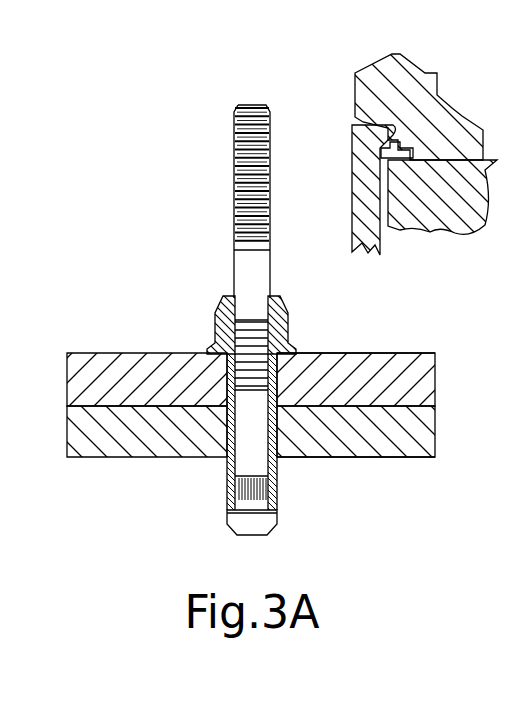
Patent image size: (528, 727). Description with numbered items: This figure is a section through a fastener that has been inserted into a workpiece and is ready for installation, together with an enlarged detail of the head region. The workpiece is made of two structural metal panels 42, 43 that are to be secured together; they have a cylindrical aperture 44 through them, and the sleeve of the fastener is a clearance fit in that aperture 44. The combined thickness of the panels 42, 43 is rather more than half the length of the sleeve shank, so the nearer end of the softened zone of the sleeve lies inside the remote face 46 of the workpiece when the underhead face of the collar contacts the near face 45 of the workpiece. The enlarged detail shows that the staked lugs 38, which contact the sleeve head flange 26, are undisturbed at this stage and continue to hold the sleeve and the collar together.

The sleeve head flange 26 is at (393, 128).
The staked lugs 38 is at (402, 147).
The structural metal panel 42 is at (143, 365).
The structural metal panel 43 is at (145, 442).
The cylindrical aperture 44 is at (278, 432).
The near face of the workpiece 45 is at (342, 355).
The remote face of the workpiece 46 is at (368, 456).